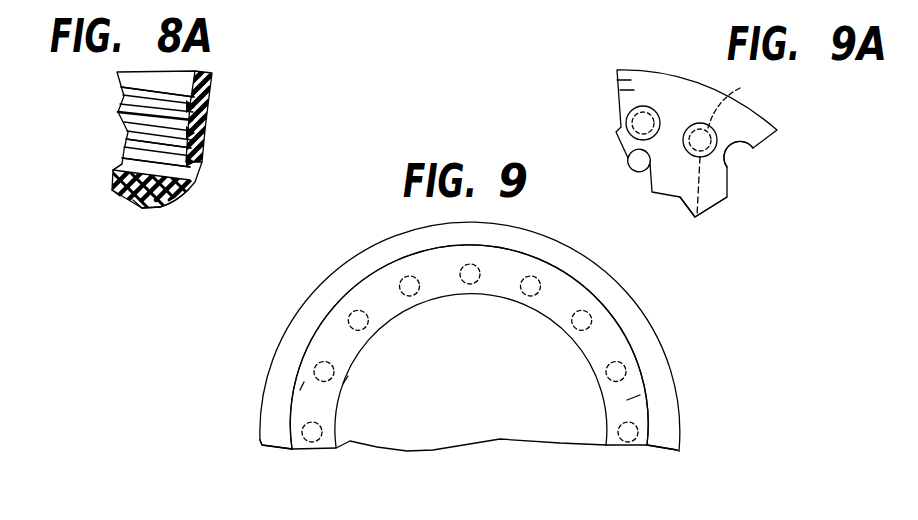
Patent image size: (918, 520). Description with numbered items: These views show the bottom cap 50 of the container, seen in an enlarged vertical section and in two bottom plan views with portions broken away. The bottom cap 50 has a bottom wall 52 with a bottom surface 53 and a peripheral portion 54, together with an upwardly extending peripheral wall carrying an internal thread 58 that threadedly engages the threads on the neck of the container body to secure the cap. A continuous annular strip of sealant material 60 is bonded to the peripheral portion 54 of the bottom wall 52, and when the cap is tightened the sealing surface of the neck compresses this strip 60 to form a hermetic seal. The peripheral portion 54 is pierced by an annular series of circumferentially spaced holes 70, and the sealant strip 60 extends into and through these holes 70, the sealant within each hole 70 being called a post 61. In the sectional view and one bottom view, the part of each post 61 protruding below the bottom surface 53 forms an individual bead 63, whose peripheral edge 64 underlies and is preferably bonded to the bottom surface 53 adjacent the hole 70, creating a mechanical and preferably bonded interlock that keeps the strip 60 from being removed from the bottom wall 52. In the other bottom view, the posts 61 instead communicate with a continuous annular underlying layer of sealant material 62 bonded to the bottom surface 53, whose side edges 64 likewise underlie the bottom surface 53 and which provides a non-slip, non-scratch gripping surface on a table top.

In FIG. 8A, the bottom cap 50 is at (99, 110).
In FIG. 9, the bottom cap 50 is at (351, 237).
In FIG. 9A, the bottom cap 50 is at (795, 127).
In FIG. 8A, the bottom wall 52 is at (116, 190).
In FIG. 9, the bottom wall 52 is at (459, 404).
In FIG. 9A, the bottom wall 52 is at (617, 80).
In FIG. 8A, the bottom surface 53 is at (133, 200).
In FIG. 9A, the bottom surface 53 is at (620, 90).
In FIG. 8A, the peripheral portion 54 is at (120, 205).
In FIG. 9, the peripheral portion 54 is at (627, 400).
In FIG. 8A, the internal thread 58 is at (190, 106).
In FIG. 8A, the strip of sealant material 60 is at (178, 168).
In FIG. 8A, the post 61 is at (146, 175).
In FIG. 9, the post 61 is at (646, 432).
In FIG. 9A, the post 61 is at (742, 88).
In FIG. 9, the underlying layer of sealant material 62 is at (597, 338).
In FIG. 8A, the bead 63 is at (157, 208).
In FIG. 9A, the bead 63 is at (700, 122).
In FIG. 8A, the peripheral edge 64 is at (174, 200).
In FIG. 9, the peripheral edge 64 is at (300, 390).
In FIG. 9A, the peripheral edge 64 is at (700, 215).
In FIG. 8A, the holes 70 is at (188, 188).
In FIG. 9, the holes 70 is at (540, 282).
In FIG. 9A, the holes 70 is at (625, 126).